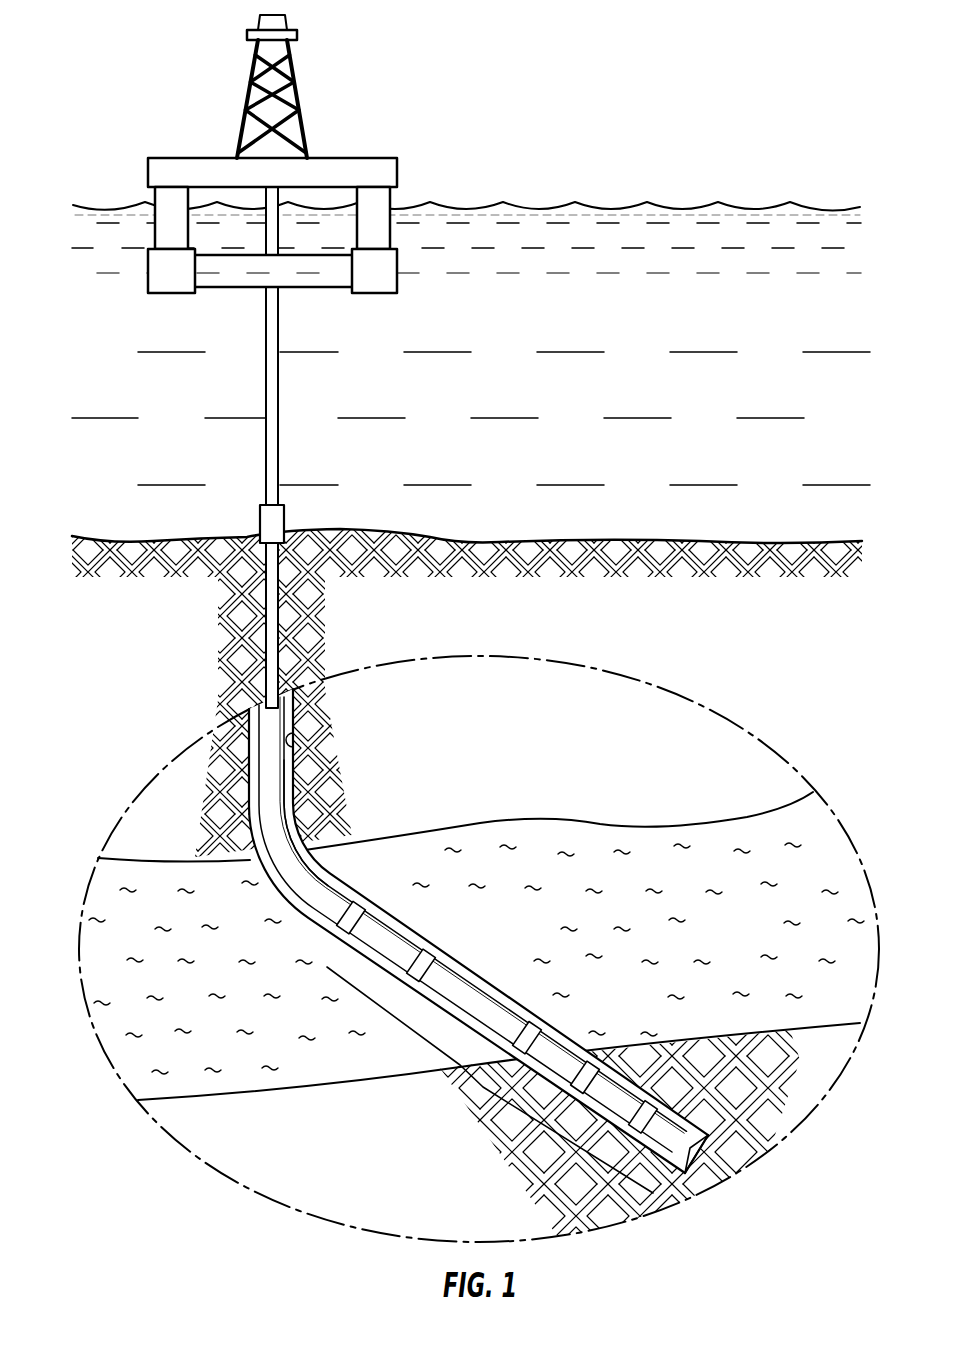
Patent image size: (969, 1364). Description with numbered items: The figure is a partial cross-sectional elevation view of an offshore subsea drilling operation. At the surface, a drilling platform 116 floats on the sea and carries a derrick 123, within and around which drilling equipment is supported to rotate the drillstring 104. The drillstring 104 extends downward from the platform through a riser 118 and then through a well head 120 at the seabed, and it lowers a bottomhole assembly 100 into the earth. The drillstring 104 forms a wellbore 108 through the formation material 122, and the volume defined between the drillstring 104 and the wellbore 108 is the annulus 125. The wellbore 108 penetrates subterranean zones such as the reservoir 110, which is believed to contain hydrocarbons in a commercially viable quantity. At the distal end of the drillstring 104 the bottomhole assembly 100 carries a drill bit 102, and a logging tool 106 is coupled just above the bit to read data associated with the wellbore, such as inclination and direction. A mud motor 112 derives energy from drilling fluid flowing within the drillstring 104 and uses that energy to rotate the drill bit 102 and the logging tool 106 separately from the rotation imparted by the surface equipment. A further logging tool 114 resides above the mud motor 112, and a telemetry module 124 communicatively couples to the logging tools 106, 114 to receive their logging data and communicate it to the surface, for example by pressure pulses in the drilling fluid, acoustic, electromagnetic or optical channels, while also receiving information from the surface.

The bottomhole assembly 100 is at (483, 1087).
The drill bit 102 is at (680, 1130).
The drillstring 104 is at (320, 893).
The logging tool 106 is at (653, 1087).
The wellbore 108 is at (295, 746).
The reservoir 110 is at (738, 942).
The mud motor 112 is at (553, 1050).
The logging tool 114 is at (433, 973).
The drilling platform 116 is at (397, 176).
The riser 118 is at (280, 390).
The well head 120 is at (285, 520).
The formation material 122 is at (320, 713).
The derrick 123 is at (295, 72).
The telemetry module 124 is at (370, 930).
The annulus 125 is at (290, 802).